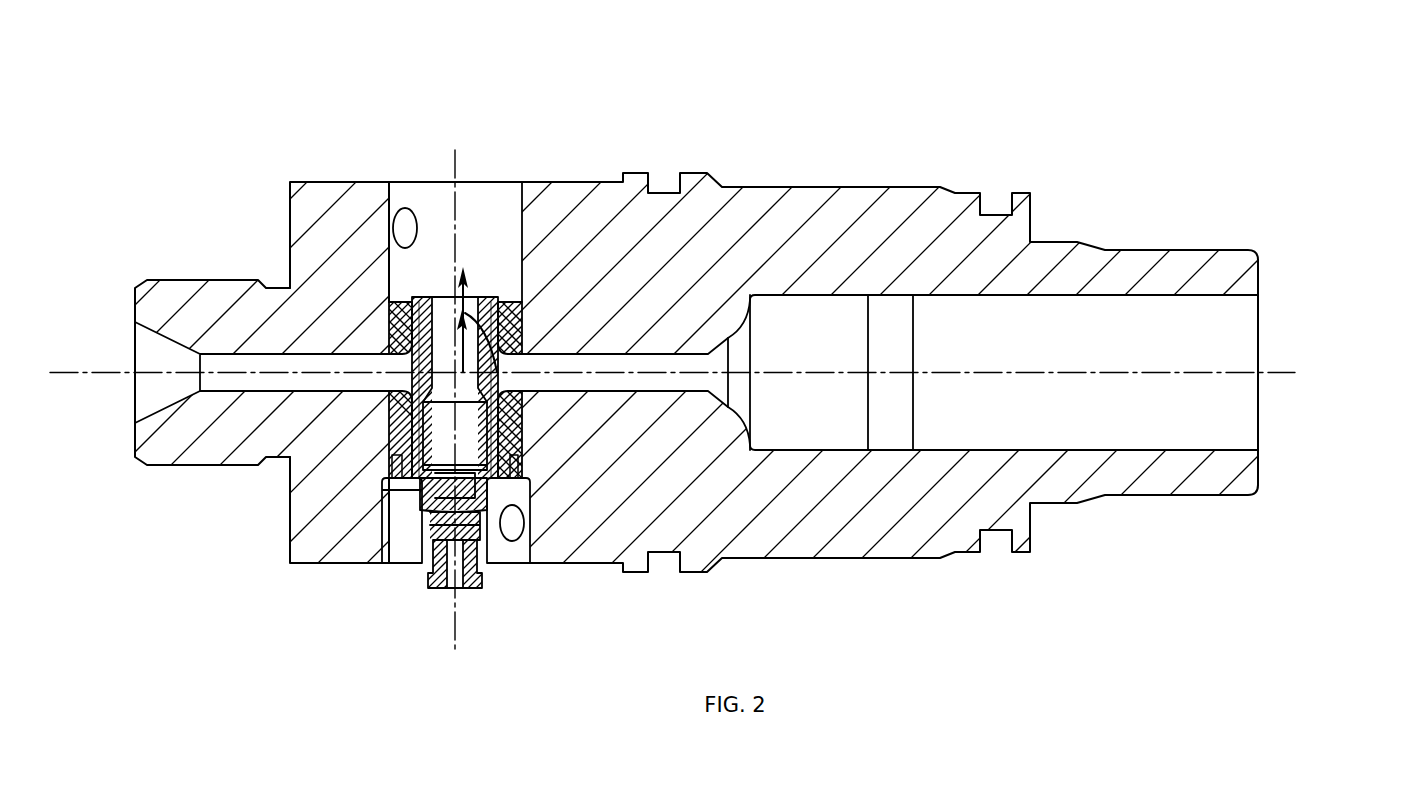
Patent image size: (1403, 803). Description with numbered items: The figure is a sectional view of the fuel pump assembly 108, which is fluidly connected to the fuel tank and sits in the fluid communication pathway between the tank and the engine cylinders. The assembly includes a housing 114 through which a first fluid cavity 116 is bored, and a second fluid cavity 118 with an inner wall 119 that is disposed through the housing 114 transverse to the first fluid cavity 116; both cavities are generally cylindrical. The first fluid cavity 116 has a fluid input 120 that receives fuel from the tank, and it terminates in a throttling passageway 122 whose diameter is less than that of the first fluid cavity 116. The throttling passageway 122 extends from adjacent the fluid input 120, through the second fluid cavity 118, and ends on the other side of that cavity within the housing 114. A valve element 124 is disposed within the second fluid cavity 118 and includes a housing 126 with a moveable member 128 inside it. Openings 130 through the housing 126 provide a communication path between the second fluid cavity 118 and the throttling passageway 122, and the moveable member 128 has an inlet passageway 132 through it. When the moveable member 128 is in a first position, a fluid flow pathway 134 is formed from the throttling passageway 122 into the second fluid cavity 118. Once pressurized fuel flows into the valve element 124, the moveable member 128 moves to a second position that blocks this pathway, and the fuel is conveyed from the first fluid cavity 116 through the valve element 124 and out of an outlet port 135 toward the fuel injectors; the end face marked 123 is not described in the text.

The fuel pump assembly 108 is at (1252, 104).
The housing 114 is at (840, 187).
The first fluid cavity 116 is at (1130, 295).
The second fluid cavity 118 is at (388, 295).
The inner wall 119 is at (511, 300).
The fluid input 120 is at (1260, 308).
The throttling passageway 122 is at (722, 385).
The end face 123 is at (1260, 427).
The valve element 124 is at (405, 586).
The housing 126 is at (388, 307).
The moveable member 128 is at (482, 300).
The openings 130 is at (532, 358).
The inlet passageway 132 is at (522, 310).
The fluid flow pathway 134 is at (565, 395).
The outlet port 135 is at (386, 299).